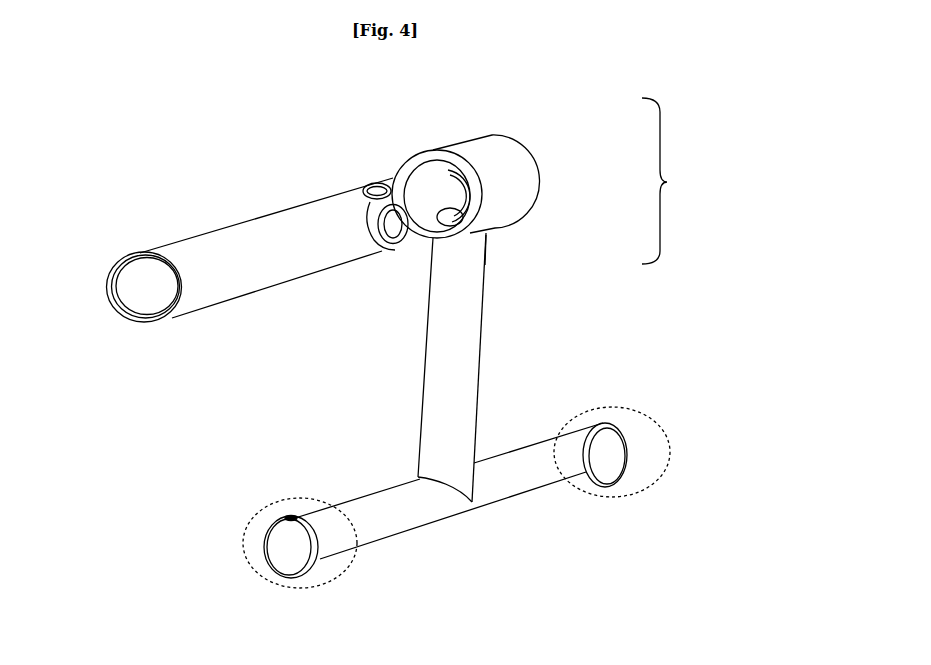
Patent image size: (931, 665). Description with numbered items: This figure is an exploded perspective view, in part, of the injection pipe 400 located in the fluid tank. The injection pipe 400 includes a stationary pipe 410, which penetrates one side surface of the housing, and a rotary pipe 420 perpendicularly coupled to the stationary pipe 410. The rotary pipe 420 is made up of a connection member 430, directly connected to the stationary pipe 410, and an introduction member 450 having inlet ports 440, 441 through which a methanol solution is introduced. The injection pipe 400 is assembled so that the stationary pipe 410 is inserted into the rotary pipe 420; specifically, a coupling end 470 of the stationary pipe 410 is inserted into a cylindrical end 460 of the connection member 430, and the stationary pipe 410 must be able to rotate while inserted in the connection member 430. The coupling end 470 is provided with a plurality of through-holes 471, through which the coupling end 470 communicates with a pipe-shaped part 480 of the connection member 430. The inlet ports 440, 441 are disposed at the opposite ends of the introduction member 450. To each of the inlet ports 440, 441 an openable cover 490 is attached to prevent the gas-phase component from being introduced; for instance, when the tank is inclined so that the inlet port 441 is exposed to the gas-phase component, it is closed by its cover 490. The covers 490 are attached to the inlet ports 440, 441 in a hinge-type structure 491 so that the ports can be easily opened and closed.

The injection pipe 400 is at (54, 106).
The stationary pipe 410 is at (235, 225).
The rotary pipe 420 is at (397, 370).
The connection member 430 is at (674, 181).
The inlet port 440 is at (247, 556).
The inlet port 441 is at (660, 427).
The introduction member 450 is at (533, 440).
The cylindrical end 460 is at (523, 147).
The coupling end 470 is at (352, 190).
The through-hole 471 is at (370, 181).
The pipe-shaped part 480 is at (490, 258).
The openable cover 490 is at (268, 552).
The hinge-type structure 491 is at (290, 519).